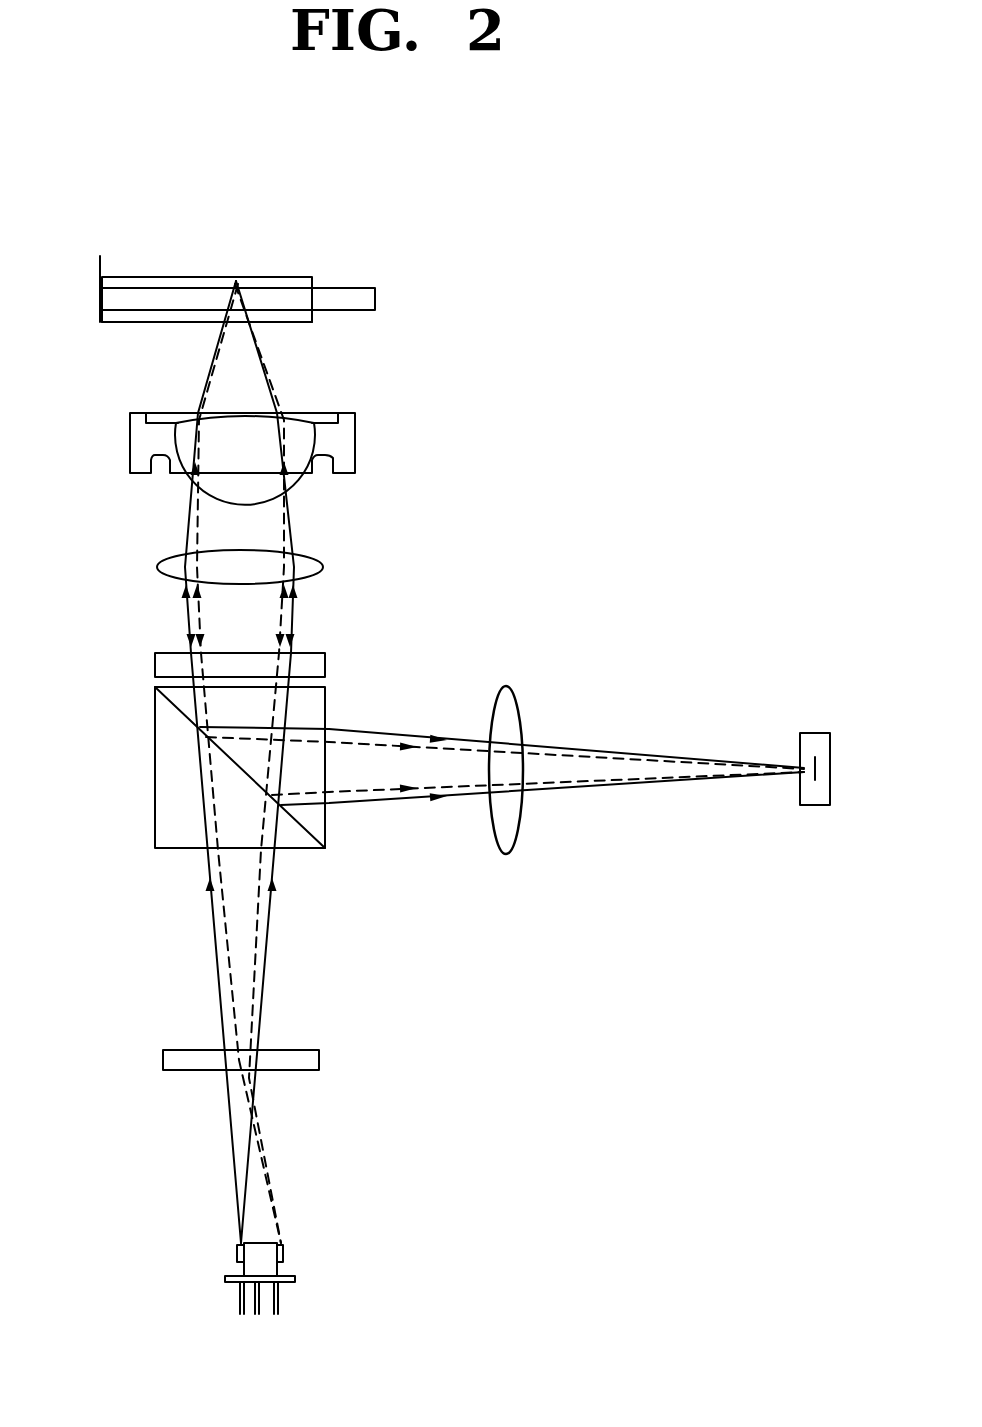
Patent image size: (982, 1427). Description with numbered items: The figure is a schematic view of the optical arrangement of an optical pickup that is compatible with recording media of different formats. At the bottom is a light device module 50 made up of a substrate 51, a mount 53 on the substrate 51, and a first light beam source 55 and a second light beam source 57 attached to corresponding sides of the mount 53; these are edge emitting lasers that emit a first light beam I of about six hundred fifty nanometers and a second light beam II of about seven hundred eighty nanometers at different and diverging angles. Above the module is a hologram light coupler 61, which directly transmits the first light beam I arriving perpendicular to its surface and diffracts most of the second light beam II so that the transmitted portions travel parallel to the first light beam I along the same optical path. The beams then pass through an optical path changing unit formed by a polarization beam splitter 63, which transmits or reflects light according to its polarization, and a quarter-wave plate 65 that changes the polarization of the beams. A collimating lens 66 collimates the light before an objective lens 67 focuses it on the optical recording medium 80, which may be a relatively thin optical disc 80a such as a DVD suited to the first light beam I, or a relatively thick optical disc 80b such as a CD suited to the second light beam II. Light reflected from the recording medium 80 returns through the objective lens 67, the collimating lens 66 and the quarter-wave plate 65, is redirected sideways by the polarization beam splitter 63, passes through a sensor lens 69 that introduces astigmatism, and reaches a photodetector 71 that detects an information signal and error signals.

The light device module 50 is at (303, 1264).
The substrate 51 is at (295, 1279).
The mount 53 is at (240, 1266).
The first light beam source 55 is at (237, 1252).
The second light beam source 57 is at (283, 1255).
The hologram light coupler 61 is at (319, 1057).
The polarization beam splitter 63 is at (155, 848).
The quarter-wave plate 65 is at (155, 660).
The collimating lens 66 is at (323, 567).
The objective lens 67 is at (355, 465).
The sensor lens 69 is at (506, 854).
The photodetector 71 is at (815, 805).
The optical recording medium 80 is at (287, 296).
The relatively thin optical disc 80a is at (146, 302).
The relatively thick optical disc 80b is at (159, 277).
The first light beam I is at (228, 1128).
The second light beam II is at (260, 1170).